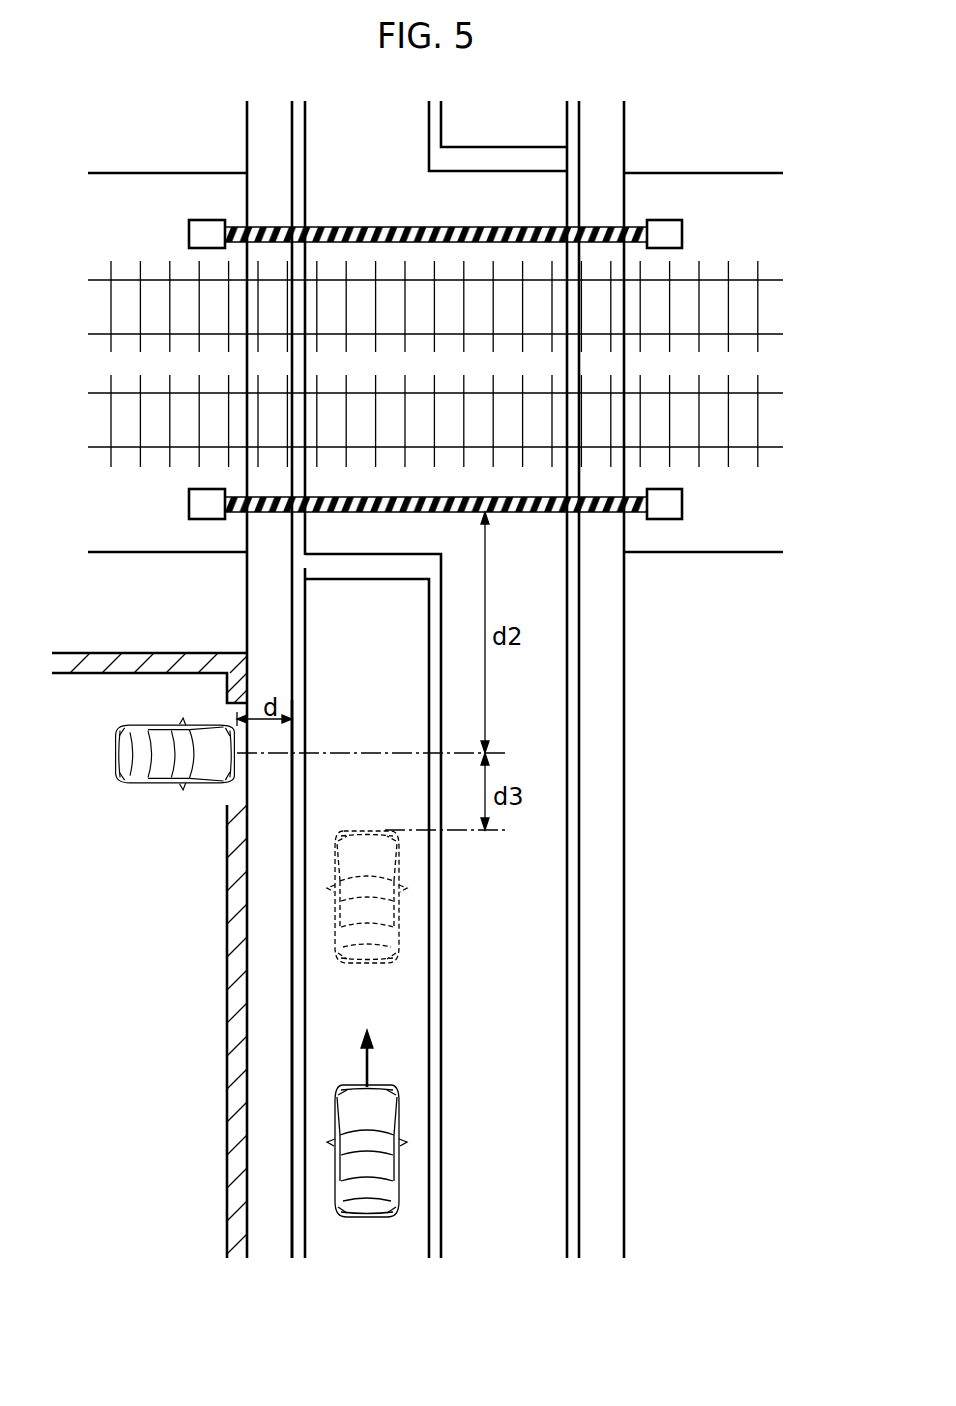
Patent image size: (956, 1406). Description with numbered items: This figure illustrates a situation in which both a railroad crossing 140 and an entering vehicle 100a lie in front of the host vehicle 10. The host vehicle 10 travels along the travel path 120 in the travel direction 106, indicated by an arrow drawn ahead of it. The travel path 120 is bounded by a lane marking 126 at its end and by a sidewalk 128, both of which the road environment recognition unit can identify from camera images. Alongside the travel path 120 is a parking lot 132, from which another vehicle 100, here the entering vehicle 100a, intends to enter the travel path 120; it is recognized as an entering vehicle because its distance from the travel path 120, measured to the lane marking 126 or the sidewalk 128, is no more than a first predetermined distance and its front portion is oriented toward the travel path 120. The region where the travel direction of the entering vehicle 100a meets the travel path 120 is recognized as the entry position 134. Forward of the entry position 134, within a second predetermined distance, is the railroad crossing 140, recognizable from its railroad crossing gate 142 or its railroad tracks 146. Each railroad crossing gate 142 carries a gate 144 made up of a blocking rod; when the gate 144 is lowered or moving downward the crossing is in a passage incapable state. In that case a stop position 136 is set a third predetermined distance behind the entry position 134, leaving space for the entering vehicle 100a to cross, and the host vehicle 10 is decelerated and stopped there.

The host vehicle 10 is at (393, 920).
The other vehicle 100 is at (173, 795).
The entering vehicle 100a is at (143, 782).
The travel direction 106 is at (370, 1067).
The travel path 120 is at (327, 1046).
The lane marking 126 is at (292, 1108).
The sidewalk 128 is at (268, 996).
The parking lot 132 is at (98, 695).
The entry position 134 is at (498, 750).
The stop position 136 is at (490, 832).
The railroad crossing 140 is at (439, 383).
The railroad crossing gate 142 is at (189, 235).
The gate 144 is at (310, 227).
The railroad tracks 146 is at (742, 334).